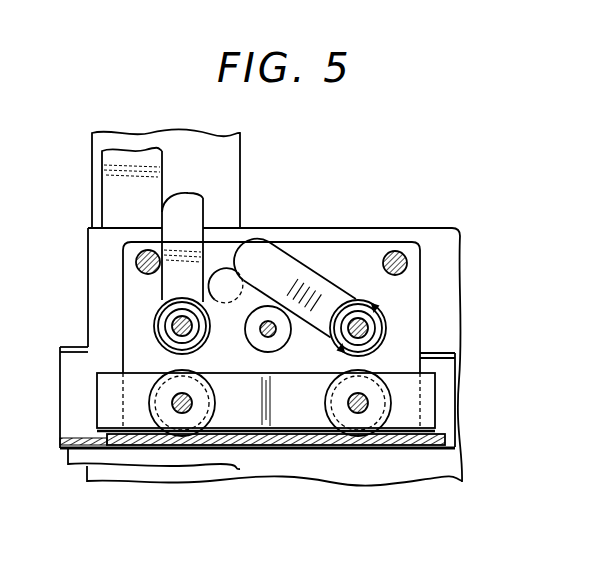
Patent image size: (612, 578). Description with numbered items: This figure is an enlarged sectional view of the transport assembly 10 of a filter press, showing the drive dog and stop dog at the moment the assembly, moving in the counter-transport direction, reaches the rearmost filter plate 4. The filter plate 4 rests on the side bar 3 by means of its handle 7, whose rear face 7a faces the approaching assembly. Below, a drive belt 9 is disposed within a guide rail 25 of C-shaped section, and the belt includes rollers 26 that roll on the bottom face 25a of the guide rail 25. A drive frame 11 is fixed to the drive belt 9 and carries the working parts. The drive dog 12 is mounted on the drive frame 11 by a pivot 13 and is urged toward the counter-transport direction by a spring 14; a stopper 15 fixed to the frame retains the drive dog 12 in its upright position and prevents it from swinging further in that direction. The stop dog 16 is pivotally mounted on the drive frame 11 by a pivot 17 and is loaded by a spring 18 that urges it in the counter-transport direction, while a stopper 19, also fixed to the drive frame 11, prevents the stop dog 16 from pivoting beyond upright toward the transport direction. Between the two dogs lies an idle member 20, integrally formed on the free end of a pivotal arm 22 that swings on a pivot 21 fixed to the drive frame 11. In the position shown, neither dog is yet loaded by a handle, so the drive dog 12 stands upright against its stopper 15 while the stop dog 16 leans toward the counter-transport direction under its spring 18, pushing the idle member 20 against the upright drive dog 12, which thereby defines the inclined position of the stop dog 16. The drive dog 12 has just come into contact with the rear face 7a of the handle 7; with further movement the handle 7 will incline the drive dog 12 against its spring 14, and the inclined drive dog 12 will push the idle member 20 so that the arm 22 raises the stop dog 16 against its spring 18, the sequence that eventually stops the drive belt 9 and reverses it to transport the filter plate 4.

The side bar 3 is at (418, 241).
The filter plate 4 is at (175, 144).
The handle 7 is at (107, 183).
The rear face of handle 7a is at (163, 188).
The drive belt 9 is at (430, 402).
The transport assembly 10 is at (310, 241).
The drive frame 11 is at (358, 243).
The drive dog 12 is at (188, 200).
The pivot 13 is at (173, 333).
The spring 14 is at (156, 314).
The stopper 15 is at (136, 263).
The stop dog 16 is at (289, 305).
The pivot 17 is at (369, 336).
The spring 18 is at (373, 309).
The stopper 19 is at (407, 263).
The idle member 20 is at (225, 265).
The pivot 21 is at (272, 333).
The pivotal arm 22 is at (233, 317).
The guide rail 25 is at (446, 453).
The bottom face of guide rail 25a is at (445, 438).
The rollers 26 is at (213, 406).